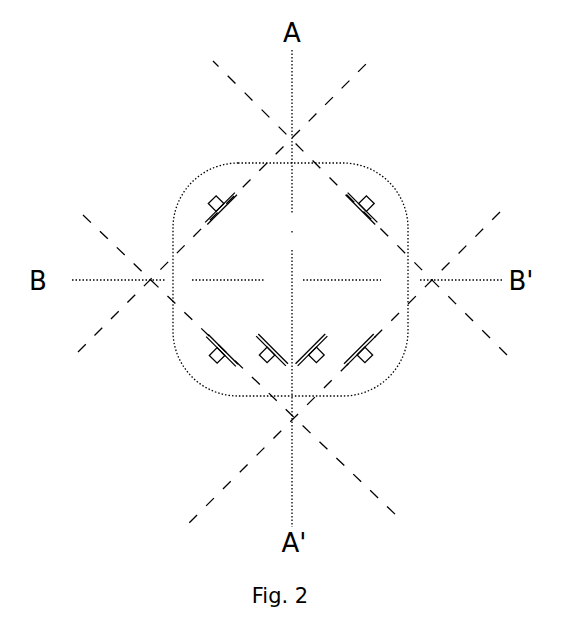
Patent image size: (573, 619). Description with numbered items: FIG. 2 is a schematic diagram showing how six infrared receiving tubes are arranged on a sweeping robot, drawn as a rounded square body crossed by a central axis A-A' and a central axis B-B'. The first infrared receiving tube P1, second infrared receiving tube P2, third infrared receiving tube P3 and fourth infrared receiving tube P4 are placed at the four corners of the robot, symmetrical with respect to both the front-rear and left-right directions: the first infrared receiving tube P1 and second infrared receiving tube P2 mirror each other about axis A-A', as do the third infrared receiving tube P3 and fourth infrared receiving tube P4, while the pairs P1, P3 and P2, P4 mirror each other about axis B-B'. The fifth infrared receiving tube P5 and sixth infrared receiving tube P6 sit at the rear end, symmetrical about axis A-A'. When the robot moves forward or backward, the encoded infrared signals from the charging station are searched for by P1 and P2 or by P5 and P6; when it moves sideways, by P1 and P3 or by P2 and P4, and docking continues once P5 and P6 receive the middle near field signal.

The first infrared receiving tube P1 is at (221, 193).
The second infrared receiving tube P2 is at (374, 194).
The third infrared receiving tube P3 is at (213, 366).
The fourth infrared receiving tube P4 is at (378, 368).
The fifth infrared receiving tube P5 is at (267, 368).
The sixth infrared receiving tube P6 is at (317, 368).